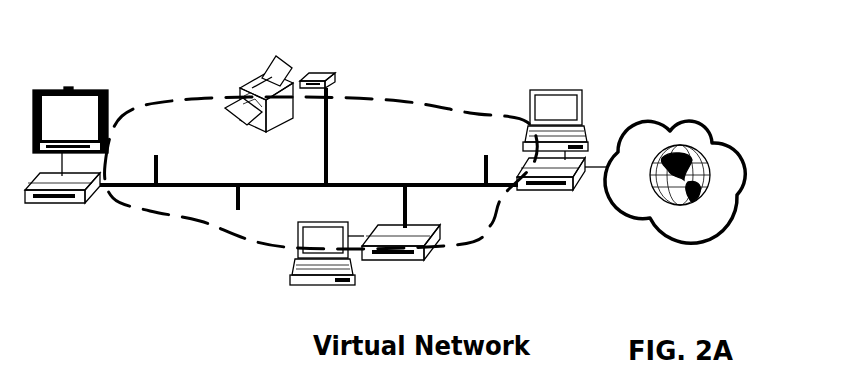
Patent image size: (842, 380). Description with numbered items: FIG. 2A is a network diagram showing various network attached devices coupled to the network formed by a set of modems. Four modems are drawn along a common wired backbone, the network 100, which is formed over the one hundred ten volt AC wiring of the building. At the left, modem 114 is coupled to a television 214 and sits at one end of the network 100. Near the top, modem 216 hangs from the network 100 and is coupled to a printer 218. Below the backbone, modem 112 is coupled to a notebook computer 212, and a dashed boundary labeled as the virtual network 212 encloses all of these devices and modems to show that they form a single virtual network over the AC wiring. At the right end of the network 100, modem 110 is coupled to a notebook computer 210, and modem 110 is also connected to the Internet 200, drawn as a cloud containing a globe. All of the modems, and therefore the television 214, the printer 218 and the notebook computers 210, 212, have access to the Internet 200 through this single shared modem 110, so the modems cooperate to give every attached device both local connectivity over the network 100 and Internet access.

The network bus / wired connection 100 is at (332, 183).
The modem 110 is at (578, 172).
The modem 112 is at (430, 252).
The modem 114 is at (87, 201).
The Internet 200 is at (677, 129).
The notebook computer 210 is at (575, 90).
The notebook computer 212 is at (400, 99).
The television 214 is at (88, 90).
The modem 216 is at (332, 72).
The printer 218 is at (284, 127).